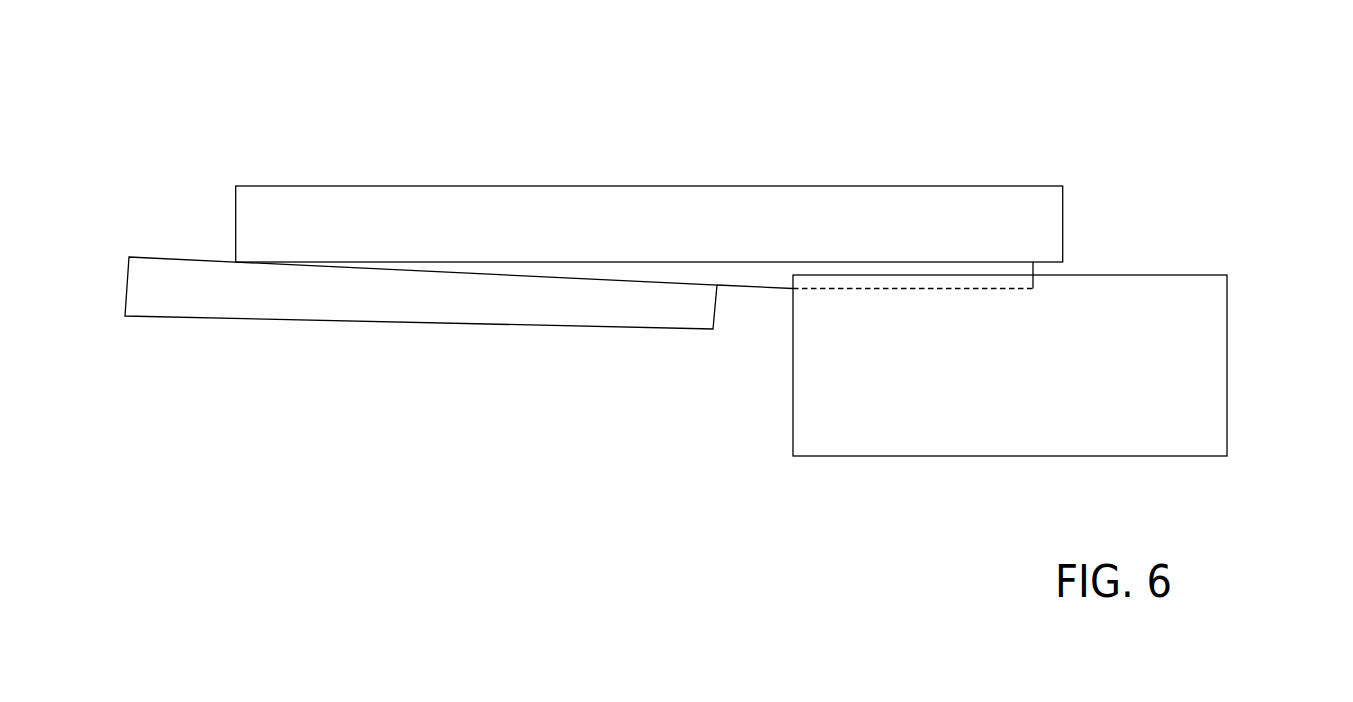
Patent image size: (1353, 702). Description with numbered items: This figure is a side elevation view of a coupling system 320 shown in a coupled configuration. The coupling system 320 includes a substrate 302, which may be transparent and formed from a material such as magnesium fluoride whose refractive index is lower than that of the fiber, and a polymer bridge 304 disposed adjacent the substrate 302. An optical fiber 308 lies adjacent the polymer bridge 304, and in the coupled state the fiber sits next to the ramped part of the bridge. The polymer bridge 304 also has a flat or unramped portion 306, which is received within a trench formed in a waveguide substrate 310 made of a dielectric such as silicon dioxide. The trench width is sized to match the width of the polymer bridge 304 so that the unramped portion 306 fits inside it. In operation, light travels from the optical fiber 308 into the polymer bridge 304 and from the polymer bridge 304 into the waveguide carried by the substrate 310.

The coupling system 320 is at (153, 56).
The substrate 302 is at (940, 186).
The optical fiber 308 is at (198, 299).
The polymer bridge 304 is at (752, 288).
The waveguide substrate 310 is at (1238, 367).
The flat or unramped portion 306 is at (933, 289).